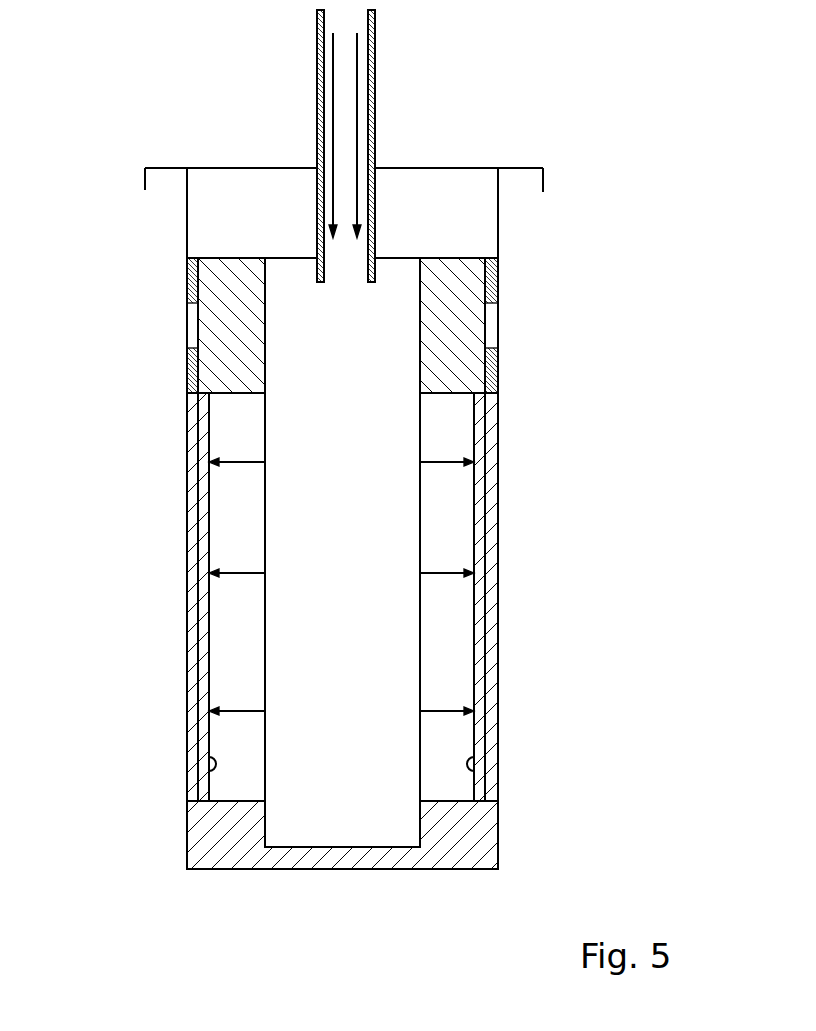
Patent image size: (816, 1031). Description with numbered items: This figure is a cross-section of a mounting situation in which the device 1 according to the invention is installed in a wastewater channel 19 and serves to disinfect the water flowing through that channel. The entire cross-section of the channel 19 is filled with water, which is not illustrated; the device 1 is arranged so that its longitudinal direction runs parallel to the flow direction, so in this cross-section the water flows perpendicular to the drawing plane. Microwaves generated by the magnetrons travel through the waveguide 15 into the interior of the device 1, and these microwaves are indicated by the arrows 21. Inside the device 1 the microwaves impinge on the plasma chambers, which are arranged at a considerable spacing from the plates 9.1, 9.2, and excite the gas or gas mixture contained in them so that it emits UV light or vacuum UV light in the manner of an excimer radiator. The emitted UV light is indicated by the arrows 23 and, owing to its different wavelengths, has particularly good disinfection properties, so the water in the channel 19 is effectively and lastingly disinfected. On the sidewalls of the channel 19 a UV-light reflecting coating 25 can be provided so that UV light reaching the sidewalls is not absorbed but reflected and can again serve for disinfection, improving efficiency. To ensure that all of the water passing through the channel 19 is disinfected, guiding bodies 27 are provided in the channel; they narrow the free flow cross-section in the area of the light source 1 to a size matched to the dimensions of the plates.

The device 1 is at (400, 625).
The plate 9.1 is at (263, 663).
The plate 9.2 is at (421, 666).
The waveguide 15 is at (375, 80).
The channel 19 is at (497, 694).
The arrows 21 is at (333, 127).
The arrows 23 is at (212, 573).
The UV-light reflecting coating 25 is at (209, 771).
The guiding bodies 27 is at (205, 330).